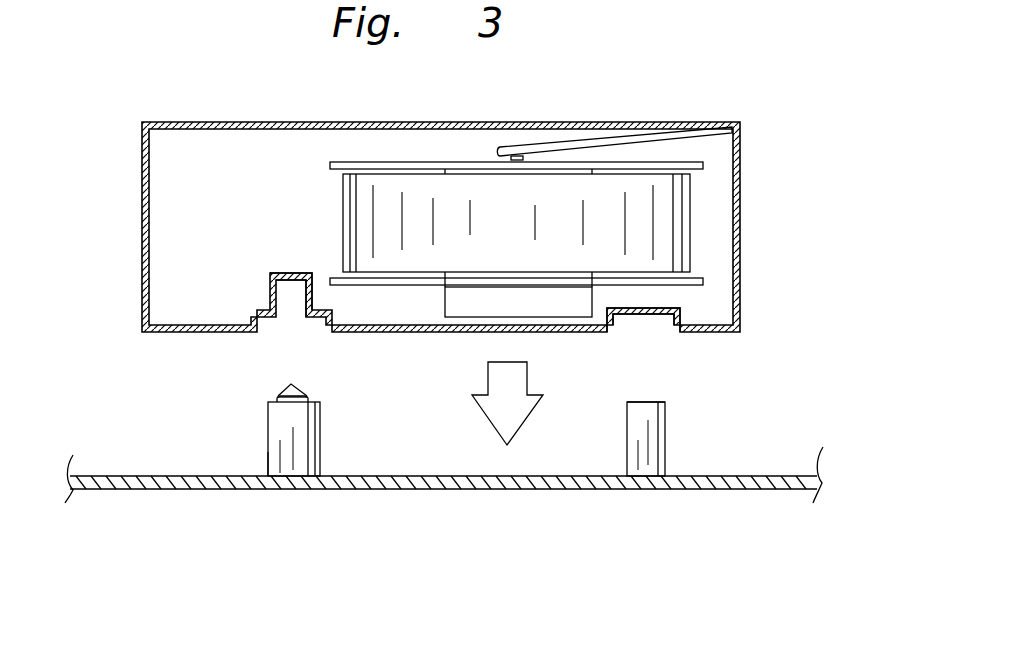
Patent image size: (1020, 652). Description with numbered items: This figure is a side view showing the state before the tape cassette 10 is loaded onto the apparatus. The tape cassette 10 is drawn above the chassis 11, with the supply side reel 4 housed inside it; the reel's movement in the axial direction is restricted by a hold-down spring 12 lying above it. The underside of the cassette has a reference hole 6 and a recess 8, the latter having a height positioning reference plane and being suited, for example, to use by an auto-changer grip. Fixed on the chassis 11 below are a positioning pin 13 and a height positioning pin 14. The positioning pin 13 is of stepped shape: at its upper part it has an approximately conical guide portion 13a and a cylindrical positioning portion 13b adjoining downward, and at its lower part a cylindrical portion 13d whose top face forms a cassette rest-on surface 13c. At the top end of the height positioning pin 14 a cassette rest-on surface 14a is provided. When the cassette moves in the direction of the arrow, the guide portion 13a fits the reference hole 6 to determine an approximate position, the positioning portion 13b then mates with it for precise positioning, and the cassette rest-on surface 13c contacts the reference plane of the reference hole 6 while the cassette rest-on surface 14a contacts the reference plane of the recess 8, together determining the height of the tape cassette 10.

The supply side reel 4 is at (693, 162).
The reference hole 6 is at (276, 272).
The recess 8 is at (648, 300).
The tape cassette 10 is at (741, 215).
The chassis 11 is at (503, 492).
The hold-down spring 12 is at (556, 145).
The positioning pin 13 is at (280, 472).
The guide portion 13a is at (305, 387).
The positioning portion 13b is at (315, 400).
The cassette rest-on surface 13c is at (275, 398).
The cylindrical portion 13d is at (268, 452).
The height positioning pin 14 is at (696, 480).
The cassette rest-on surface 14a is at (653, 403).